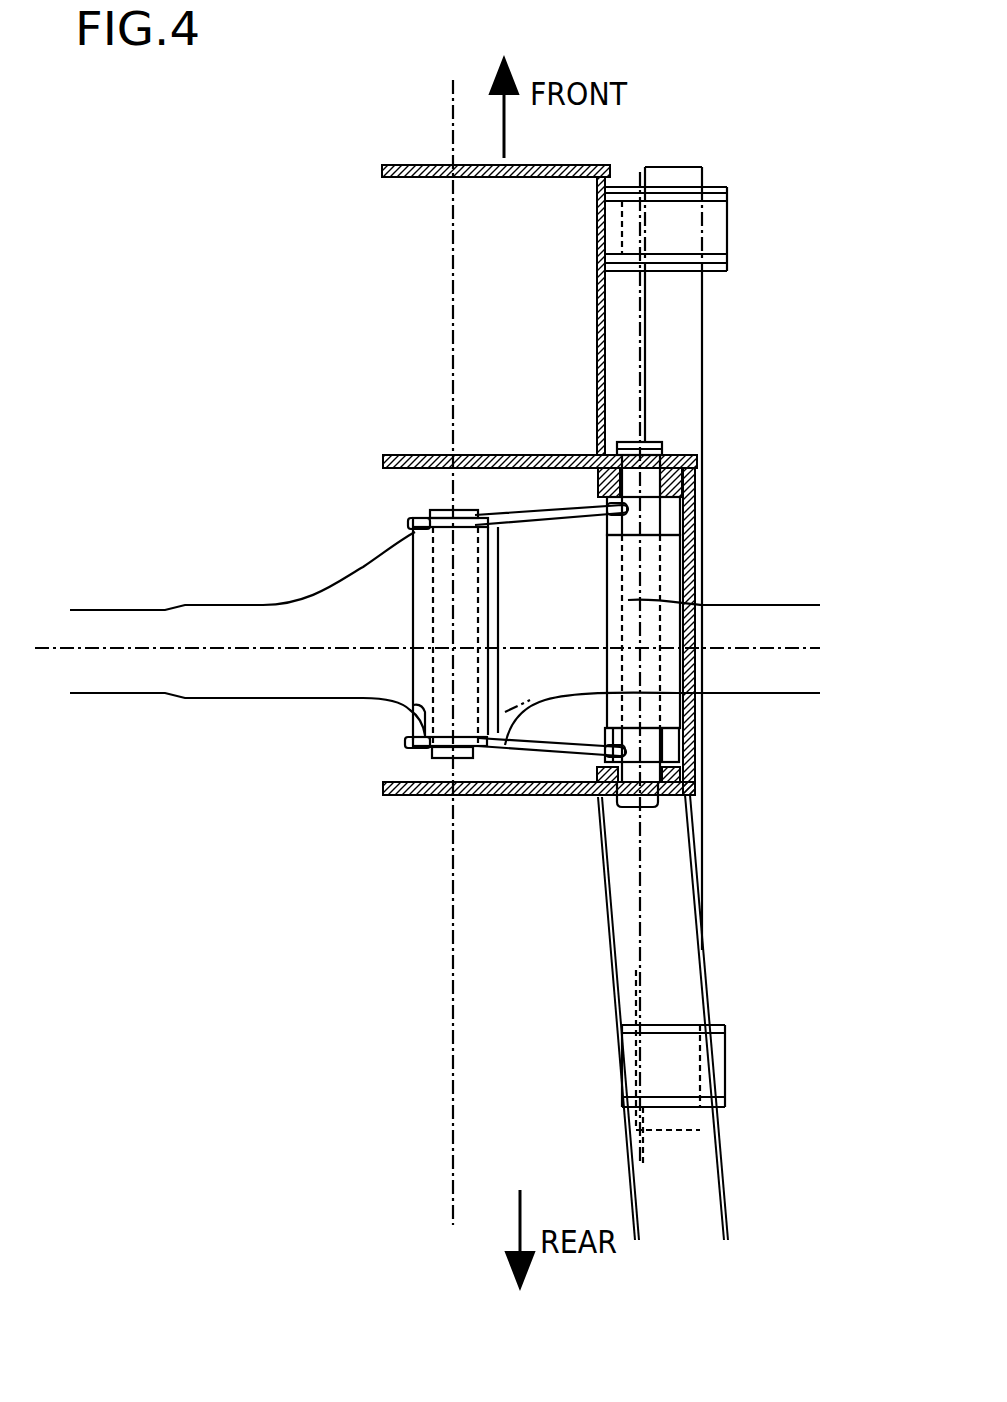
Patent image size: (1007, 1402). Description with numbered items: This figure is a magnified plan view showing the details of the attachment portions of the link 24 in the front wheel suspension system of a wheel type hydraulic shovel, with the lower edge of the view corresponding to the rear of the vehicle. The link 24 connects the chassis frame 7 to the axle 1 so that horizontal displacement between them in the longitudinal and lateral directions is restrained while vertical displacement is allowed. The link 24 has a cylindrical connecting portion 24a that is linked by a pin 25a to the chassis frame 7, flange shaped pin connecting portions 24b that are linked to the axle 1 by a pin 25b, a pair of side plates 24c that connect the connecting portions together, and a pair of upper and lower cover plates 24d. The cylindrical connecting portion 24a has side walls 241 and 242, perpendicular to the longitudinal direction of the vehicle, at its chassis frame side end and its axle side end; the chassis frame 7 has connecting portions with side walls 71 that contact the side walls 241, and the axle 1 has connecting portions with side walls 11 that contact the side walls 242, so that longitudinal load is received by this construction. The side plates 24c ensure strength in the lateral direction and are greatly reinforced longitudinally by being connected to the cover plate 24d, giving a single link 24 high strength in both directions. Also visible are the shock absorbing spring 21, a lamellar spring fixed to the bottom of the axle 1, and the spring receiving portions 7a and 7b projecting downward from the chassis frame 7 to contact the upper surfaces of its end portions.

The axle 1 is at (250, 690).
The chassis frame 7 is at (422, 177).
The spring receiving portion 7a is at (726, 1060).
The spring receiving portion 7b is at (727, 237).
The side wall 11 is at (420, 517).
The shock absorbing spring 21 is at (688, 166).
The link 24 is at (537, 634).
The cylindrical connecting portion 24a is at (650, 518).
The pin connecting portion 24b is at (413, 747).
The side plate 24c is at (523, 508).
The cover plate 24d is at (562, 720).
The pin 25a is at (653, 440).
The pin 25b is at (440, 508).
The side wall 71 is at (700, 510).
The side wall 241 is at (697, 478).
The side wall 242 is at (420, 530).